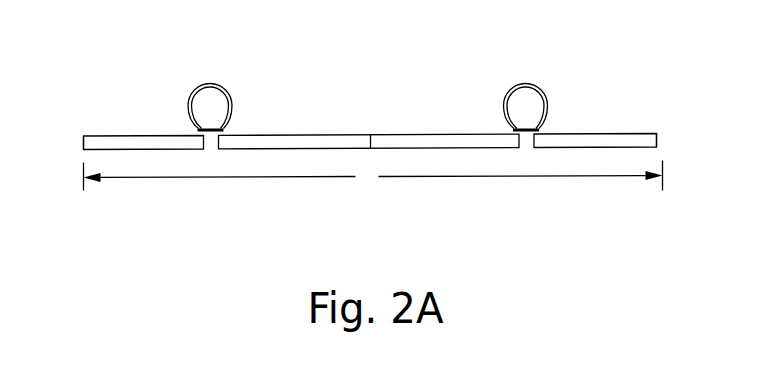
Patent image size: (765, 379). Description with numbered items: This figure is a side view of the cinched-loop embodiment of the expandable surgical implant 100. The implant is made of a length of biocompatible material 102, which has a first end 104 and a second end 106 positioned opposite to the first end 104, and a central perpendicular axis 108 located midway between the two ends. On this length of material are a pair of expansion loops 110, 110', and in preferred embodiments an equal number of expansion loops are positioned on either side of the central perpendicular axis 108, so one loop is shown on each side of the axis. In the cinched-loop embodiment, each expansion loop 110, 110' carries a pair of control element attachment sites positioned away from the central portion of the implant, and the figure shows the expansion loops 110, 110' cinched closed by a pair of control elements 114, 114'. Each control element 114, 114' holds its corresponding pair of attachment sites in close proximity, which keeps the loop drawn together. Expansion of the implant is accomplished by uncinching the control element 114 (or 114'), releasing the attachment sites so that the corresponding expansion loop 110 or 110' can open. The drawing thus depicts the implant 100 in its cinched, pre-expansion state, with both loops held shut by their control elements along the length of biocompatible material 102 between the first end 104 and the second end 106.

The expandable surgical implant 100 is at (337, 33).
The biocompatible material 102 is at (386, 207).
The first end 104 is at (87, 135).
The second end 106 is at (645, 133).
The central perpendicular axis 108 is at (372, 105).
The expansion loop 110 is at (206, 85).
The expansion loop 110' is at (523, 85).
The control element 114 is at (227, 150).
The control element 114' is at (511, 149).